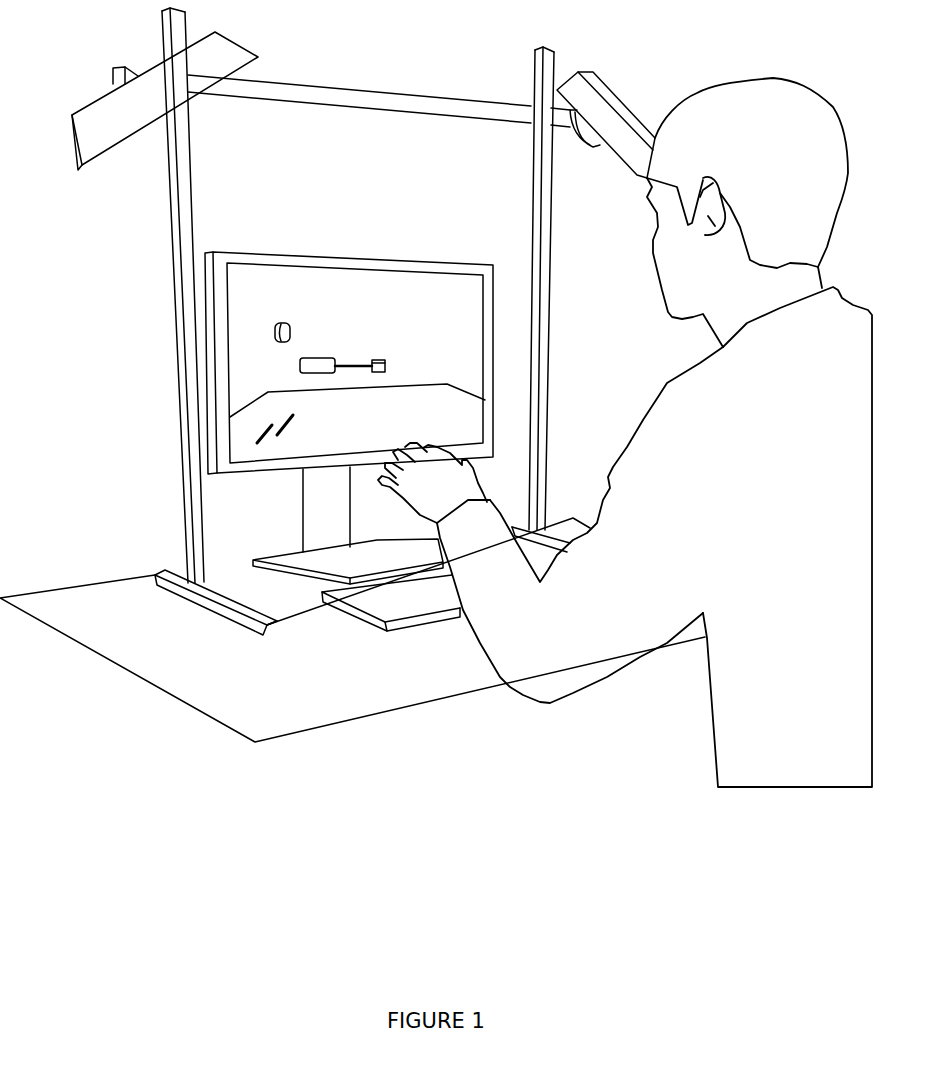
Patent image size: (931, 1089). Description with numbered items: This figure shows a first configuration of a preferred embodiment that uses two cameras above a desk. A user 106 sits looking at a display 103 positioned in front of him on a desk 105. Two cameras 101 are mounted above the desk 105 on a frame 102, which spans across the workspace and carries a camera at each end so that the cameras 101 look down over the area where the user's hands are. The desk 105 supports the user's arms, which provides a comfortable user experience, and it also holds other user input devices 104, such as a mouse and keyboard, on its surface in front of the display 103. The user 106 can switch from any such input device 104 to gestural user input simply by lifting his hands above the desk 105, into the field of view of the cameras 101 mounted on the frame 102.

The cameras 101 is at (363, 108).
The frame 102 is at (379, 97).
The display 103 is at (349, 408).
The user input devices 104 is at (391, 603).
The desk 105 is at (352, 630).
The user 106 is at (625, 423).